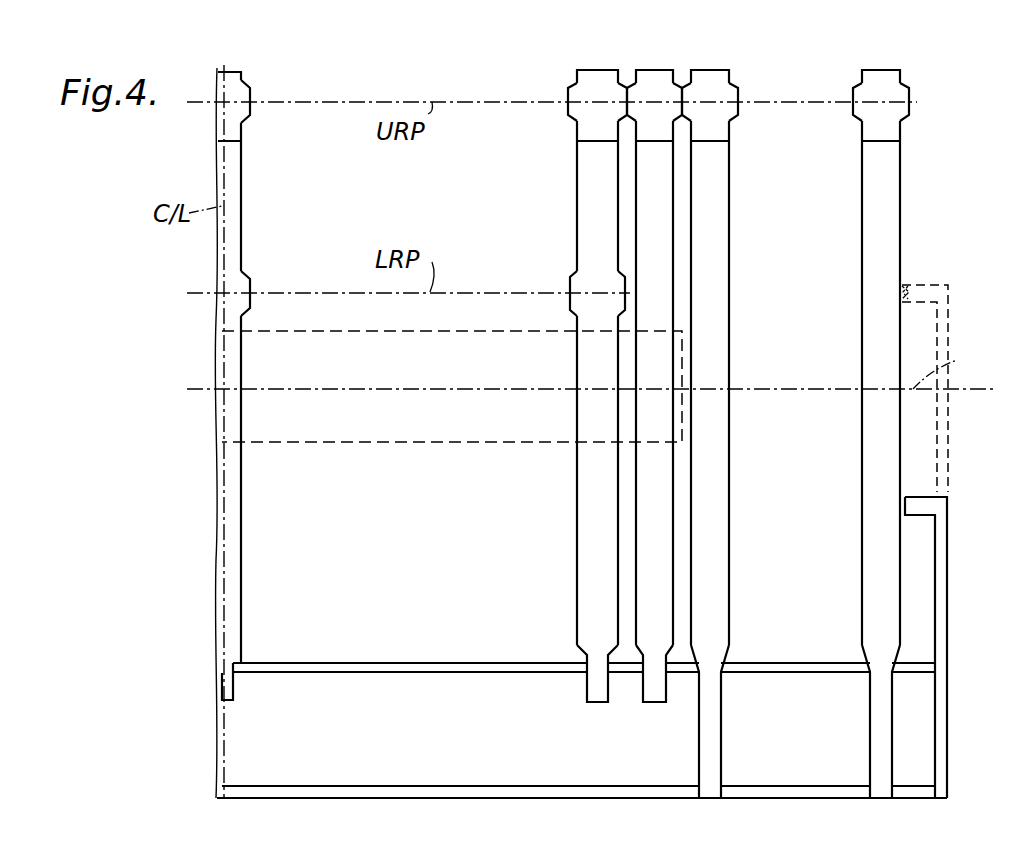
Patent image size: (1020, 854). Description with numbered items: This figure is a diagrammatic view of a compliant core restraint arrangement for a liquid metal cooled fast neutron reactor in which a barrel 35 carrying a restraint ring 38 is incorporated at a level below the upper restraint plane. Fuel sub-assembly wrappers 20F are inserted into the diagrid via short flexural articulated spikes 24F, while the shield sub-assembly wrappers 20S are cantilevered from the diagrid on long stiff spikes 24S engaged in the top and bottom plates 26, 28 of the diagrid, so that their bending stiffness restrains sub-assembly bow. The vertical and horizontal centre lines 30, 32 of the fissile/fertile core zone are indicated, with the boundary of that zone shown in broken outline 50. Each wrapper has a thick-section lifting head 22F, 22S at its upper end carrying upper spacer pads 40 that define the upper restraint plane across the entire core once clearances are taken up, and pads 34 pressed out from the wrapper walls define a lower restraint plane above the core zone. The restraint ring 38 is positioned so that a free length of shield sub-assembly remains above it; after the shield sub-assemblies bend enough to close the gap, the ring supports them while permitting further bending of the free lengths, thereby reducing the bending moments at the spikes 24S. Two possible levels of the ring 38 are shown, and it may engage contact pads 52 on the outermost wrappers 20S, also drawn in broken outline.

The fuel sub-assembly wrapper 20F is at (233, 511).
The shield sub-assembly wrapper 20S is at (717, 513).
The fuel sub-assembly lifting head 22F is at (240, 80).
The shield sub-assembly lifting head 22S is at (718, 82).
The fuel sub-assembly spike 24F is at (233, 688).
The shield sub-assembly spike 24S is at (720, 733).
The diagrid top plate 26 is at (467, 664).
The diagrid bottom plate 28 is at (462, 787).
The vertical centre line 30 is at (222, 255).
The horizontal centre line 32 is at (811, 388).
The spacer pad 34 is at (250, 292).
The barrel 35 is at (944, 447).
The restraint ring 38 is at (946, 291).
The upper spacer pad 40 is at (252, 108).
The fissile/fertile core zone boundary 50 is at (474, 444).
The contact pad 52 is at (905, 298).